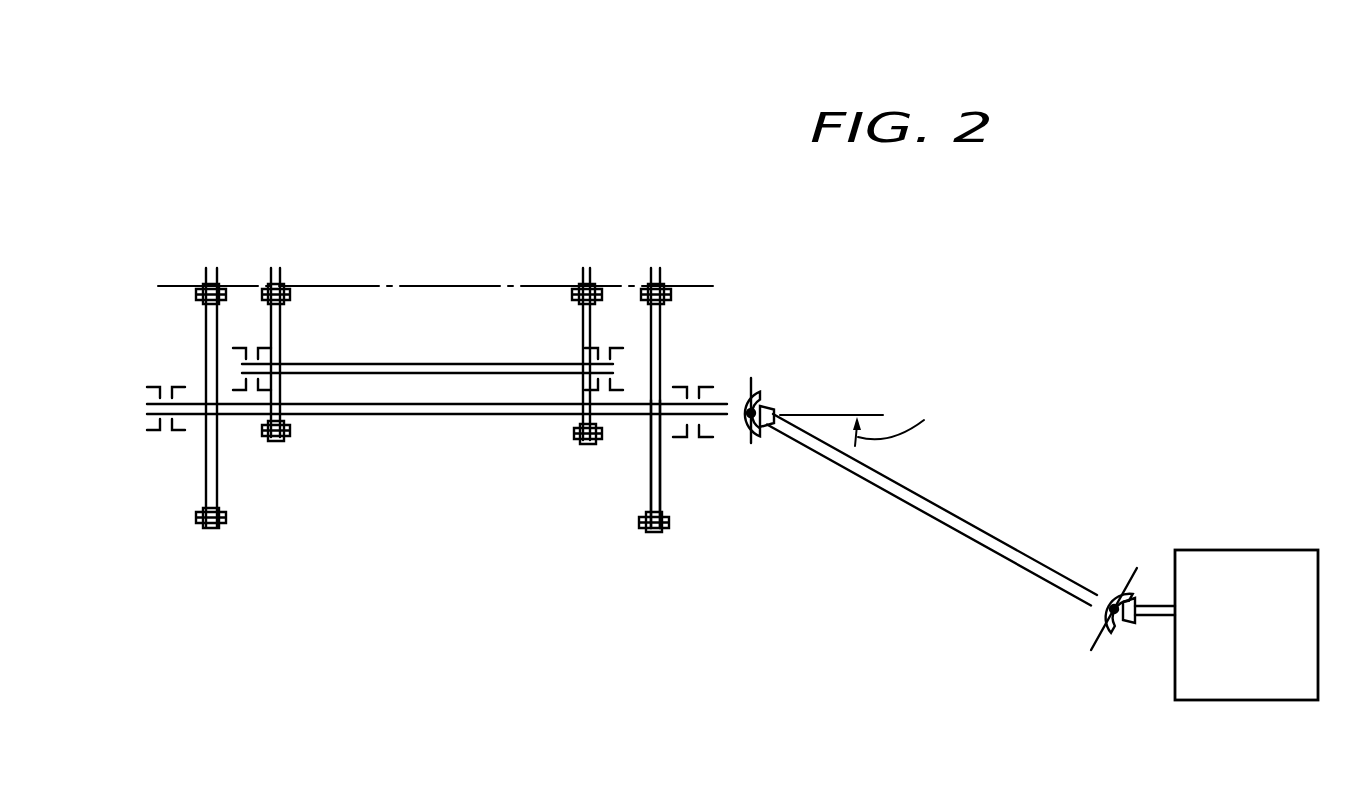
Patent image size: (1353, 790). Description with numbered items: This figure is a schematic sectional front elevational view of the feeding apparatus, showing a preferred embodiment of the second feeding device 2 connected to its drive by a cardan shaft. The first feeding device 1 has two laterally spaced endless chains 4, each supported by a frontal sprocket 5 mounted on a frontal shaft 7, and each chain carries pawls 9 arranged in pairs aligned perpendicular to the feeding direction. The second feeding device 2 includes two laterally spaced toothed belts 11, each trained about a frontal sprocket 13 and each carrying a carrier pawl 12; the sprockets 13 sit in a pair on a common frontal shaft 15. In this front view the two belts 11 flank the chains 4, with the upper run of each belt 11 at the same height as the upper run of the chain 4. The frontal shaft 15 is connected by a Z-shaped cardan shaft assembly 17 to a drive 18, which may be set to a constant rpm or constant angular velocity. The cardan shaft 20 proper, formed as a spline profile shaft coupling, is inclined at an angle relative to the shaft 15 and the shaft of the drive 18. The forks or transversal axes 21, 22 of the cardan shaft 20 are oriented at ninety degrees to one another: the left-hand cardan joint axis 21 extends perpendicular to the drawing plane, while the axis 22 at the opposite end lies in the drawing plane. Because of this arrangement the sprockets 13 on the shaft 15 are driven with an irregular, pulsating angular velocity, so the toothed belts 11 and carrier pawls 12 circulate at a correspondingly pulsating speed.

The first feeding device 1 is at (569, 325).
The second feeding device 2 is at (680, 341).
The endless chain 4 is at (578, 441).
The frontal sprocket 5 is at (283, 337).
The frontal shaft 7 is at (430, 368).
The pawl 9 is at (275, 284).
The toothed belt 11 is at (666, 524).
The carrier pawl 12 is at (656, 284).
The frontal sprocket 13 is at (645, 478).
The frontal shaft 15 is at (362, 413).
The Z-shaped cardan shaft assembly 17 is at (1068, 503).
The drive 18 is at (1254, 568).
The cardan shaft 20 is at (923, 500).
The cardan joint axis 21 is at (757, 408).
The cardan joint axis 22 is at (1100, 634).
The reference plane E is at (328, 284).